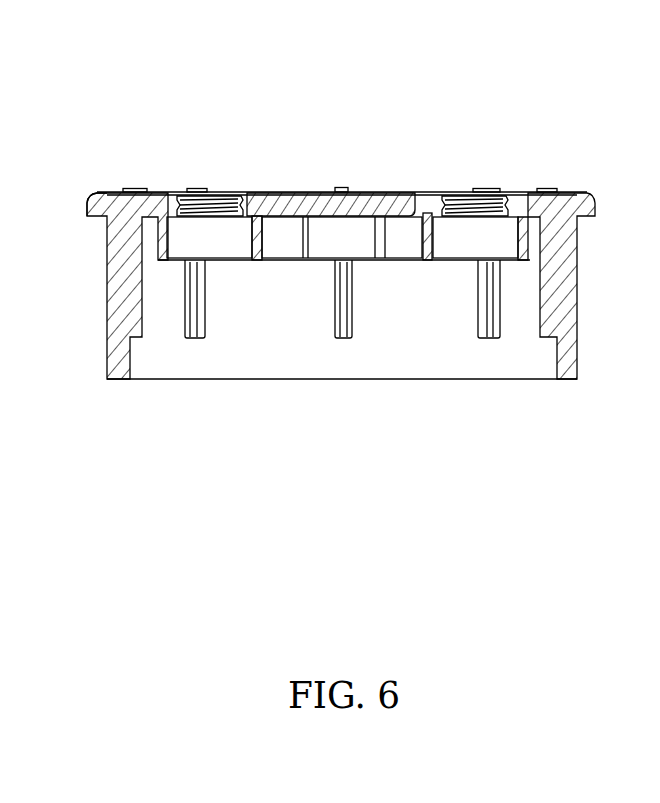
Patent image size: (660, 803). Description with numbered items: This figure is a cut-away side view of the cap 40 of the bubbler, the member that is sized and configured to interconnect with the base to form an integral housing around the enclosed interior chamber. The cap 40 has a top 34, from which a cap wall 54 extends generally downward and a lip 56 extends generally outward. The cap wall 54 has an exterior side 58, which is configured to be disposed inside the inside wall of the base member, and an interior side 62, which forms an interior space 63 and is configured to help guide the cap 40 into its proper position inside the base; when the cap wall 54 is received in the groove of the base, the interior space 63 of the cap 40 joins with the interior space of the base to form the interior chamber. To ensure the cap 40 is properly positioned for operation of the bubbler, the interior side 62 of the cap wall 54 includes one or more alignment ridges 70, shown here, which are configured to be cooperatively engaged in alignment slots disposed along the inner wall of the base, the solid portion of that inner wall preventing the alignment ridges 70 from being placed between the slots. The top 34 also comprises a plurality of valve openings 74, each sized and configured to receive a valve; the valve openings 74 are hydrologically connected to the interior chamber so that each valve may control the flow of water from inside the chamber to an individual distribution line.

The cap 40 is at (458, 127).
The top 34 is at (358, 186).
The cap wall 54 is at (105, 307).
The lip 56 is at (100, 203).
The exterior side 58 is at (577, 287).
The interior side 62 is at (302, 355).
The interior space 63 is at (498, 355).
The alignment ridge 70 is at (193, 340).
The valve opening 74 is at (218, 188).